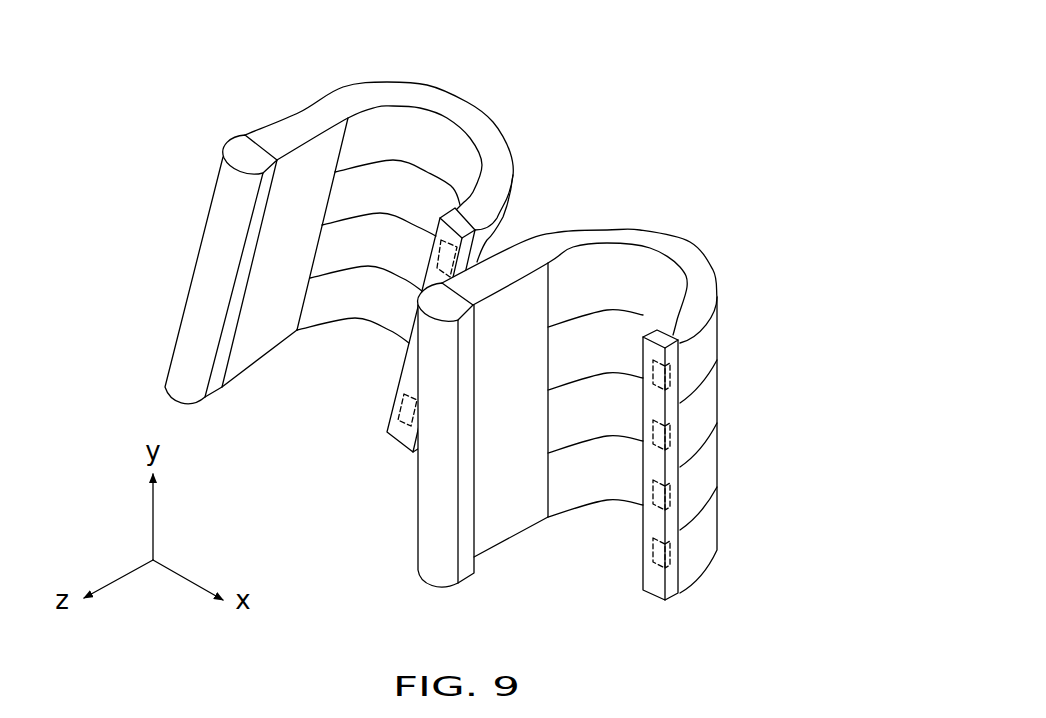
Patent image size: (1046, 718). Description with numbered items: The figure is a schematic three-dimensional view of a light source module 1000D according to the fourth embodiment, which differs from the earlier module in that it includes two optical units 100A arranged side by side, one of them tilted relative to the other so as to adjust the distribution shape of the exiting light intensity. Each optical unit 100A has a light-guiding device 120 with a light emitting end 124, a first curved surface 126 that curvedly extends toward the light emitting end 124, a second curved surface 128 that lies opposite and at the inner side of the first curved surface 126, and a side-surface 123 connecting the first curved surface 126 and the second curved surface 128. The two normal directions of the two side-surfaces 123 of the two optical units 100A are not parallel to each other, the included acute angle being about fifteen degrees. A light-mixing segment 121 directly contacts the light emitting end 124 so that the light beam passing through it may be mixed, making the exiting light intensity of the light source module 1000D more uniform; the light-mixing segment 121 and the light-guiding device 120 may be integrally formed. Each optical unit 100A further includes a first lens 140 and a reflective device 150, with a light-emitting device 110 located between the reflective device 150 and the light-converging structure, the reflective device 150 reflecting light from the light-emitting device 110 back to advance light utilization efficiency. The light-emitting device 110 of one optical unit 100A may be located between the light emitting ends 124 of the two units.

The optical unit 100A is at (524, 98).
The light-emitting device 110 is at (398, 405).
The light-guiding device 120 is at (497, 153).
The light-mixing segment 121 is at (297, 173).
The side-surface 123 is at (467, 120).
The light emitting end 124 is at (349, 140).
The first curved surface 126 is at (313, 106).
The second curved surface 128 is at (368, 106).
The first lens 140 is at (238, 157).
The reflective device 150 is at (410, 382).
The light source module 1000D is at (835, 642).